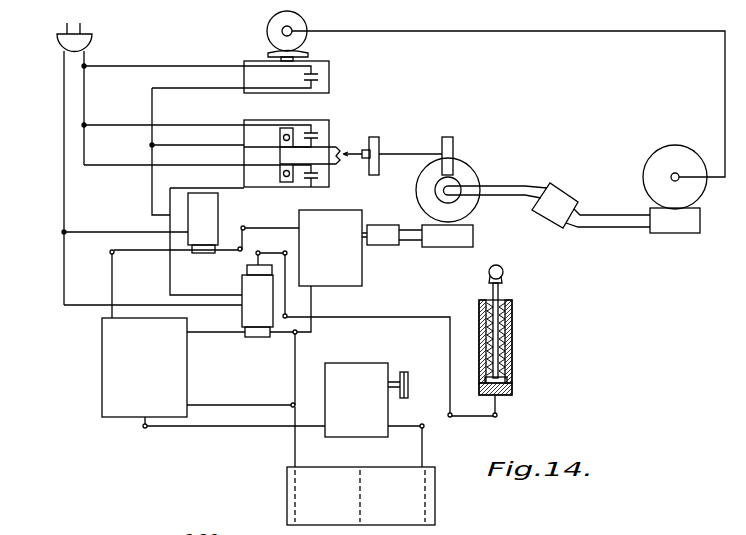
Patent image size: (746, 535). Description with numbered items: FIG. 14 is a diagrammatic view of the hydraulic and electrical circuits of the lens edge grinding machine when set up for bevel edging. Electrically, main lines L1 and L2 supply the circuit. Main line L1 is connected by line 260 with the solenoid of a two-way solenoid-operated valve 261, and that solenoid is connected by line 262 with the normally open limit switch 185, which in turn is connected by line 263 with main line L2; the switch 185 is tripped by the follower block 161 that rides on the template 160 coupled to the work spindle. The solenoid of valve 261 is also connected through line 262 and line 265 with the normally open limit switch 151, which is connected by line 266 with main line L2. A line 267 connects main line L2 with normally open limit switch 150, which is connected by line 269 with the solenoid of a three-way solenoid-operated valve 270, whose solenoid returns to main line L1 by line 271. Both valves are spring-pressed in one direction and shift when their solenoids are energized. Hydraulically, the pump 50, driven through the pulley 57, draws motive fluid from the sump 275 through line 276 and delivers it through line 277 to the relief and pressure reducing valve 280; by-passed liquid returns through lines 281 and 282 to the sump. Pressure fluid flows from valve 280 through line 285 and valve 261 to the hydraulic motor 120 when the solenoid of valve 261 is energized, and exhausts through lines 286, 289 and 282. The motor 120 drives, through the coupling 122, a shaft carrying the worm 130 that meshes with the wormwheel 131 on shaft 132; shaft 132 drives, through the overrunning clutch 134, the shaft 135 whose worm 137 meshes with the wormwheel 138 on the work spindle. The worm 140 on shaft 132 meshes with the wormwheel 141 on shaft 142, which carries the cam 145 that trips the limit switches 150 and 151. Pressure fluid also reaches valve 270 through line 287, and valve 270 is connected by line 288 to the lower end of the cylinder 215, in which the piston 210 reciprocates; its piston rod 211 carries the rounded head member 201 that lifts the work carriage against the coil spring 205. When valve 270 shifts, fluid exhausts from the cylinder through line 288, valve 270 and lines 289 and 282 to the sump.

The main line L1 is at (62, 67).
The main line L2 is at (87, 56).
The hydraulic pump 50 is at (352, 373).
The pulley 57 is at (409, 374).
The hydraulic motor 120 is at (353, 273).
The coupling 122 is at (390, 245).
The worm 130 is at (437, 247).
The wormwheel 131 is at (420, 193).
The shaft 132 is at (522, 192).
The overrunning clutch 134 is at (565, 198).
The shaft 135 is at (618, 222).
The worm 137 is at (680, 234).
The wormwheel 138 is at (676, 146).
The worm 140 is at (458, 182).
The wormwheel 141 is at (452, 153).
The shaft 142 is at (428, 144).
The cam 145 is at (378, 145).
The limit switch 150 is at (330, 186).
The limit switch 151 is at (330, 127).
The template 160 is at (299, 24).
The follower block 161 is at (308, 54).
The limit switch 185 is at (330, 77).
The head member 201 is at (504, 273).
The coil spring 205 is at (513, 338).
The piston 210 is at (508, 378).
The piston rod 211 is at (499, 293).
The cylinder 215 is at (512, 322).
The line 260 is at (113, 231).
The two-way solenoid-operated valve 261 is at (203, 236).
The line 262 is at (171, 89).
The line 263 is at (163, 66).
The line 265 is at (191, 147).
The line 266 is at (202, 125).
The line 267 is at (191, 167).
The line 269 is at (189, 190).
The three-way solenoid-operated valve 270 is at (243, 318).
The line 271 is at (137, 304).
The sump 275 is at (430, 497).
The line 276 is at (424, 447).
The line 277 is at (207, 427).
The relief and pressure reducing valve 280 is at (115, 368).
The line 281 is at (213, 403).
The line 282 is at (297, 447).
The line 285 is at (268, 227).
The line 286 is at (312, 303).
The line 287 is at (226, 334).
The line 288 is at (400, 317).
The line 289 is at (282, 337).